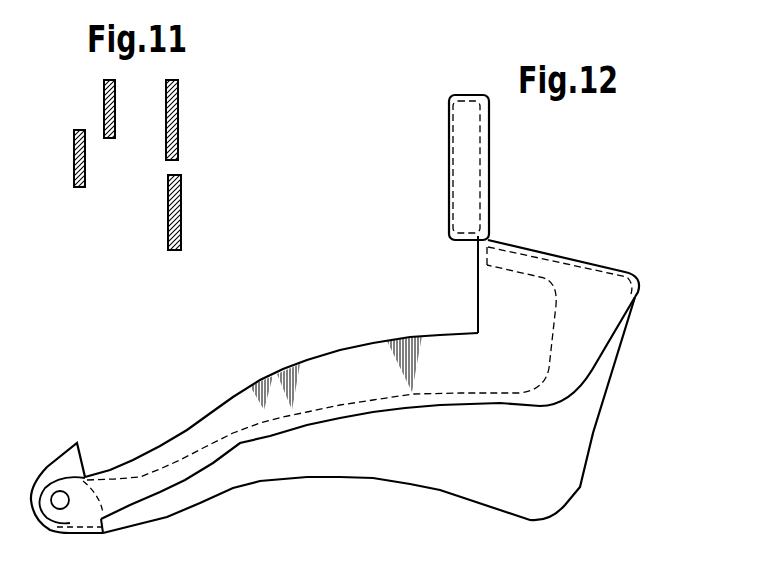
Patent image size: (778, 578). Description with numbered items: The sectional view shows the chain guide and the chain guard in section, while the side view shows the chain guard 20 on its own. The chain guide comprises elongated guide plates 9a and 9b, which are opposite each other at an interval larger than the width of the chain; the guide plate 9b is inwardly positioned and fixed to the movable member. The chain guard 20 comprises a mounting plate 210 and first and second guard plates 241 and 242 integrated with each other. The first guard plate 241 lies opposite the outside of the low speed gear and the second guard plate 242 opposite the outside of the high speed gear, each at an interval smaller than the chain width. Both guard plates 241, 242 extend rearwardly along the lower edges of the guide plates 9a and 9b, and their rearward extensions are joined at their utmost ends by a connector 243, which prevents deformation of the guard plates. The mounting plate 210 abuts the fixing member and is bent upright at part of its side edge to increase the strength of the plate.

In FIG. 11, the guide plate 9a is at (104, 98).
In FIG. 11, the guide plate 9b is at (178, 110).
In FIG. 12, the chain guard 20 is at (623, 270).
In FIG. 12, the mounting plate 210 is at (489, 161).
In FIG. 11, the first guard plate 241 is at (181, 228).
In FIG. 12, the first guard plate 241 is at (590, 433).
In FIG. 11, the second guard plate 242 is at (74, 165).
In FIG. 12, the second guard plate 242 is at (590, 350).
In FIG. 12, the connector 243 is at (70, 470).